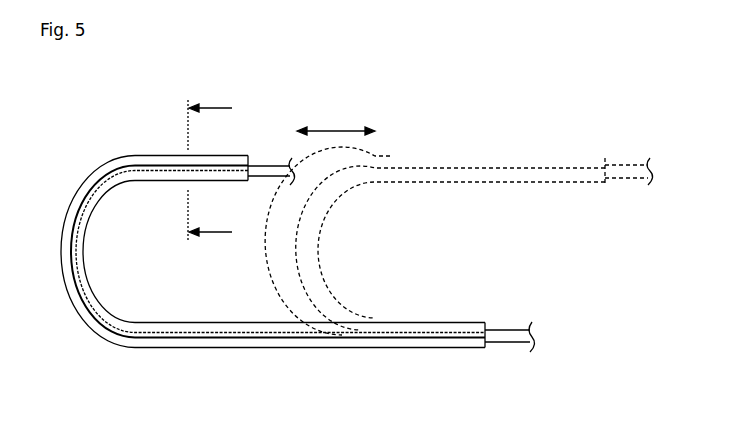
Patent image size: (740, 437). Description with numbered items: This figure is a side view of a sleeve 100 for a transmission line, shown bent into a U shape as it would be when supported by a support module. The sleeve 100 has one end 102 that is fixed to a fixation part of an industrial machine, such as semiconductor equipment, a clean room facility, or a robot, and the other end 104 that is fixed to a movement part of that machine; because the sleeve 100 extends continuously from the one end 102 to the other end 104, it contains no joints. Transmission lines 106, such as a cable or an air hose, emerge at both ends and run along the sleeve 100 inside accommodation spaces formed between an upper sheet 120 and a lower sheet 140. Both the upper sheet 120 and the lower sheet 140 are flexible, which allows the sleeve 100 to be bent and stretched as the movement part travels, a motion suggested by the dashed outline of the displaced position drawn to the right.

The sleeve for a transmission line 100 is at (83, 82).
The one end 102 is at (497, 352).
The other end 104 is at (252, 163).
The transmission lines 106 is at (264, 184).
The upper sheet 120 is at (128, 154).
The lower sheet 140 is at (129, 190).